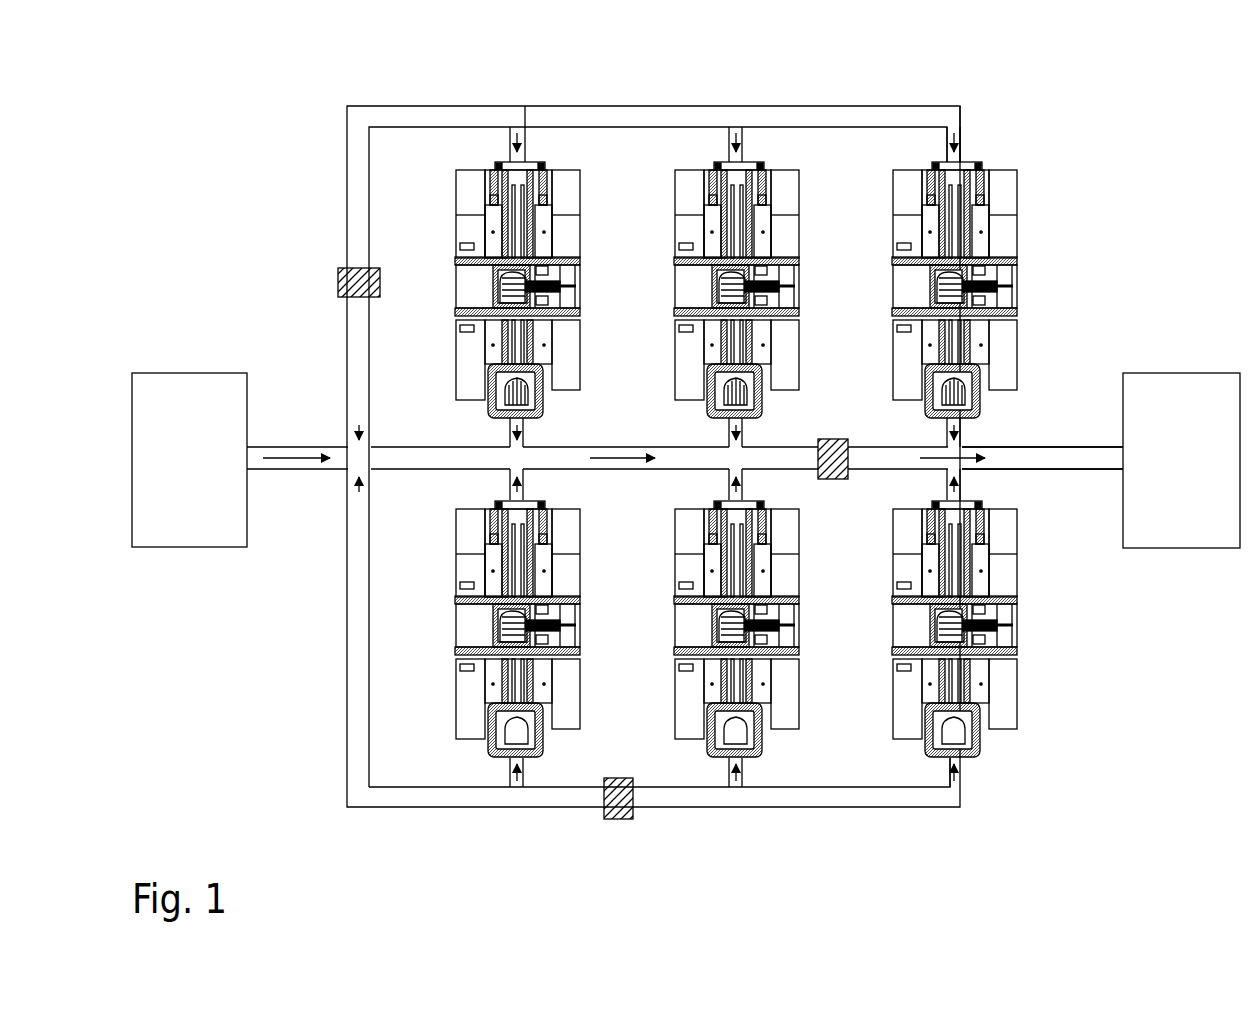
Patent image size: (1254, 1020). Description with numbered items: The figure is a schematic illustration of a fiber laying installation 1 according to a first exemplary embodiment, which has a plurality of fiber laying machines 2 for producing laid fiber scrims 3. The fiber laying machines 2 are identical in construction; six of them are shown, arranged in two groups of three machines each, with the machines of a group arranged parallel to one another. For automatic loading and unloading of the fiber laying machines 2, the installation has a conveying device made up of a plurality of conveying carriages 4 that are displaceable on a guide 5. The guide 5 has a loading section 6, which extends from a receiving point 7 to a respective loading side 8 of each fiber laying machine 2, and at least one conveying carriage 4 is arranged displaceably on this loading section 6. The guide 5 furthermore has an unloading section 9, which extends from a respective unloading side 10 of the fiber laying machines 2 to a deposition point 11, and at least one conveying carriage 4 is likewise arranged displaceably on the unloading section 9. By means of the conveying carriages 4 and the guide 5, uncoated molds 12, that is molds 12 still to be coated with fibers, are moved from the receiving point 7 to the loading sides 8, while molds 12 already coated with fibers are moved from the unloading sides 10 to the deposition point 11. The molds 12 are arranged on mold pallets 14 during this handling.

The fiber laying installation 1 is at (830, 88).
The fiber laying machine 2 is at (497, 158).
The laid fiber scrim 3 is at (503, 386).
The conveying carriage 4 is at (338, 280).
The guide 5 is at (346, 315).
The loading section 6 is at (430, 108).
The receiving point 7 is at (186, 378).
The loading side 8 is at (522, 120).
The unloading section 9 is at (1030, 447).
The unloading side 10 is at (505, 425).
The deposition point 11 is at (1170, 378).
The mold 12 is at (505, 290).
The mold pallet 14 is at (495, 268).